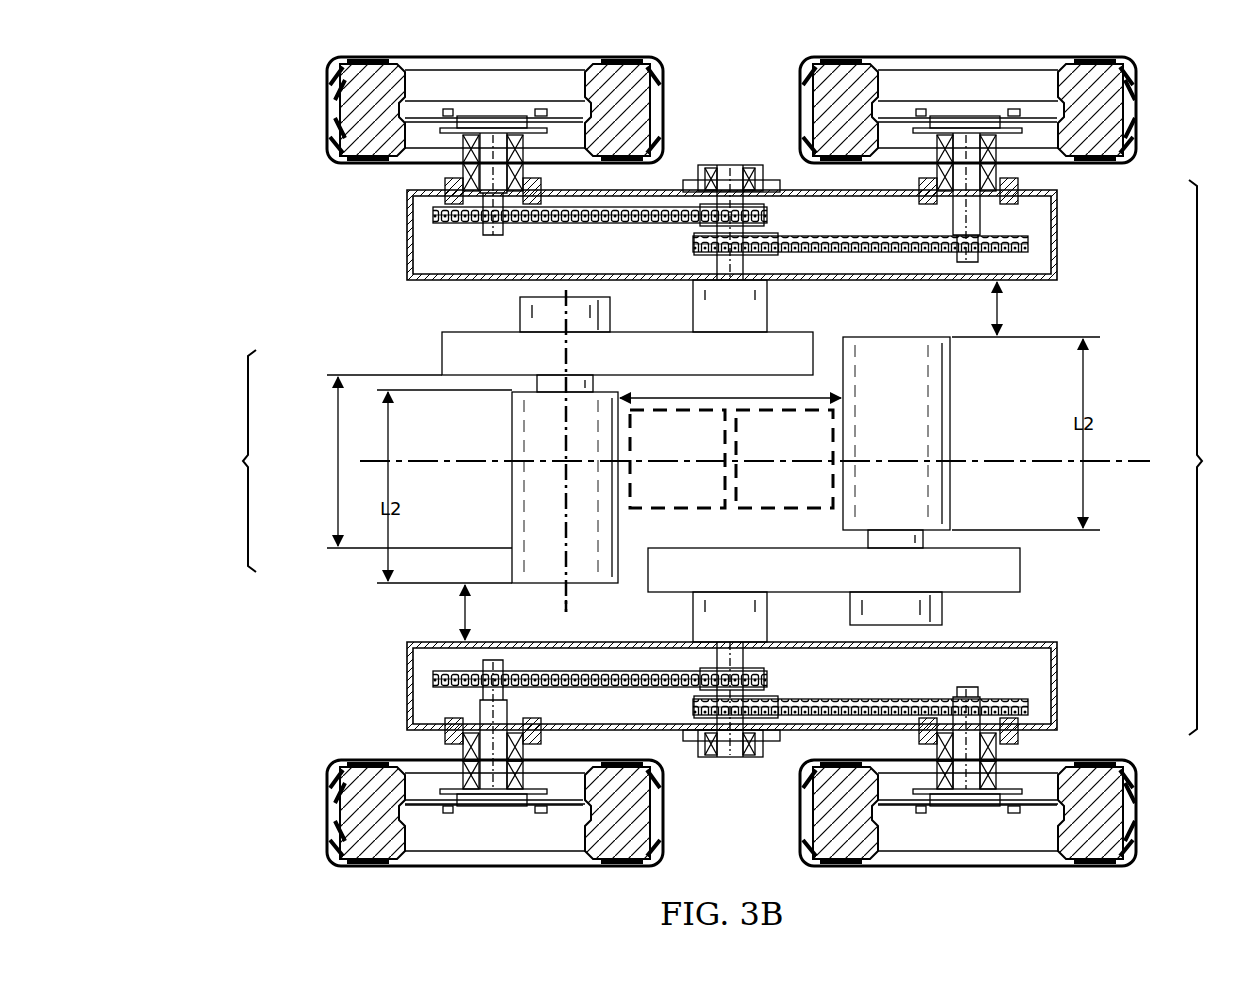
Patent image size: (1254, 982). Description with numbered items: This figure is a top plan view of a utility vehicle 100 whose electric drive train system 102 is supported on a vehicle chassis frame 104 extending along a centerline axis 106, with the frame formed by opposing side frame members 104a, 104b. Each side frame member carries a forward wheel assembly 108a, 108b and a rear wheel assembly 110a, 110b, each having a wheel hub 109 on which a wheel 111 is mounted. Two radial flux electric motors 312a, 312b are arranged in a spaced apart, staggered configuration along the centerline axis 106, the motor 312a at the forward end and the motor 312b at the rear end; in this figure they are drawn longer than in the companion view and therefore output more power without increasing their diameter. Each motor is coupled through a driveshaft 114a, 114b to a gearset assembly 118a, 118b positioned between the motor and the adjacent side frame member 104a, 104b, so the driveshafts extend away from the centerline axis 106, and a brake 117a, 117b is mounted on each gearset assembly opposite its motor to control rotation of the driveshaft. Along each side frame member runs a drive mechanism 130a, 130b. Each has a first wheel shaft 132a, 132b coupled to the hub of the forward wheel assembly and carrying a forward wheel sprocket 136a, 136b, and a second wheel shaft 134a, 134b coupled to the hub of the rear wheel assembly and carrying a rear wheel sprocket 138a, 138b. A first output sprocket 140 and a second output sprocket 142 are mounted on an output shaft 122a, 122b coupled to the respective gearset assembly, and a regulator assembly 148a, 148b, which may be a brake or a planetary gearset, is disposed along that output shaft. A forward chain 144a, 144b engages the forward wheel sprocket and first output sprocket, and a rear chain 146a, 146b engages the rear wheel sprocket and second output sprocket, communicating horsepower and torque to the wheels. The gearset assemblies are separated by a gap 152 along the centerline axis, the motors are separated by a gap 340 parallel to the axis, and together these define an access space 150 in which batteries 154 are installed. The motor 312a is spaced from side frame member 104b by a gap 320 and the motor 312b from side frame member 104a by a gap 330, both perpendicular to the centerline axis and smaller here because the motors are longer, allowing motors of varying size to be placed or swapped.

The utility vehicle 100 is at (162, 162).
The electric drive train system 102 is at (1219, 457).
The vehicle chassis frame 104 is at (1090, 300).
The side frame member 104a is at (407, 268).
The side frame member 104b is at (407, 728).
The centerline axis 106 is at (1122, 456).
The forward wheel assembly 108a is at (322, 105).
The forward wheel assembly 108b is at (322, 822).
The wheel hub 109 is at (548, 118).
The rear wheel assembly 110a is at (1140, 82).
The rear wheel assembly 110b is at (1140, 840).
The wheel 111 is at (330, 140).
The driveshaft 114a is at (592, 385).
The driveshaft 114b is at (868, 540).
The brake 117a is at (520, 310).
The brake 117b is at (942, 610).
The gearset assembly 118a is at (440, 350).
The gearset assembly 118b is at (1022, 583).
The output shaft 122a is at (738, 178).
The output shaft 122b is at (725, 760).
The drive mechanism 130a is at (868, 268).
The drive mechanism 130b is at (808, 683).
The first wheel shaft 132a is at (495, 118).
The first wheel shaft 132b is at (495, 805).
The second wheel shaft 134a is at (968, 118).
The second wheel shaft 134b is at (968, 805).
The forward wheel sprocket 136a is at (435, 215).
The forward wheel sprocket 136b is at (435, 678).
The rear wheel sprocket 138a is at (1030, 250).
The rear wheel sprocket 138b is at (1025, 710).
The first output sprocket 140 is at (702, 215).
The second output sprocket 142 is at (762, 245).
The forward chain 144a is at (450, 222).
The forward chain 144b is at (450, 685).
The rear chain 146a is at (1010, 237).
The rear chain 146b is at (1010, 700).
The regulator assembly 148a is at (768, 310).
The regulator assembly 148b is at (693, 615).
The access space 150 is at (225, 461).
The gap 152 is at (338, 462).
The batteries 154 is at (695, 475).
The radial flux electric motor 312a is at (512, 487).
The radial flux electric motor 312b is at (950, 437).
The gap 320 is at (465, 630).
The gap 330 is at (1000, 305).
The gap 340 is at (845, 392).